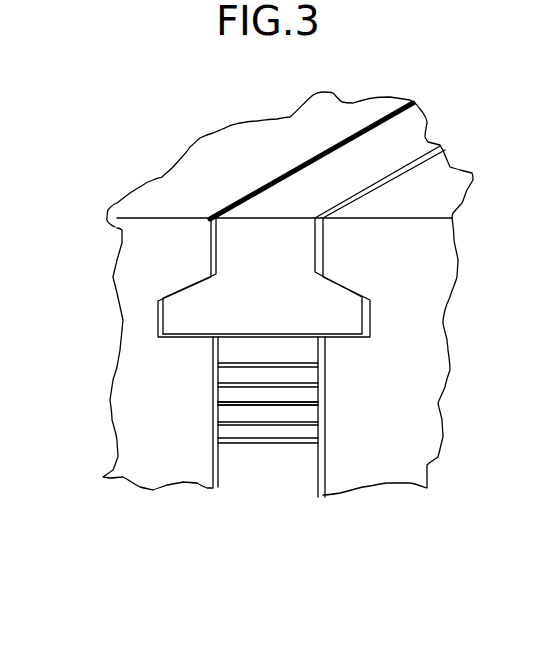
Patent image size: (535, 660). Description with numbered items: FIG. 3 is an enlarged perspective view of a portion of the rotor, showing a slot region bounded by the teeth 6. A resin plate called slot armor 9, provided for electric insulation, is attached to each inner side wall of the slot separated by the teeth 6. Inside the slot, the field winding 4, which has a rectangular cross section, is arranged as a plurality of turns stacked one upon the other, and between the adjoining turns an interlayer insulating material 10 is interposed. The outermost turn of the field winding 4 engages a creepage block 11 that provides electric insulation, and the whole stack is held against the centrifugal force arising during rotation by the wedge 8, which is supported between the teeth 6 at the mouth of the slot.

The teeth 6 is at (125, 242).
The wedge 8 is at (247, 228).
The creepage block 11 is at (215, 354).
The slot armor 9 is at (323, 455).
The field winding 4 is at (232, 384).
The interlayer insulating material 10 is at (213, 400).